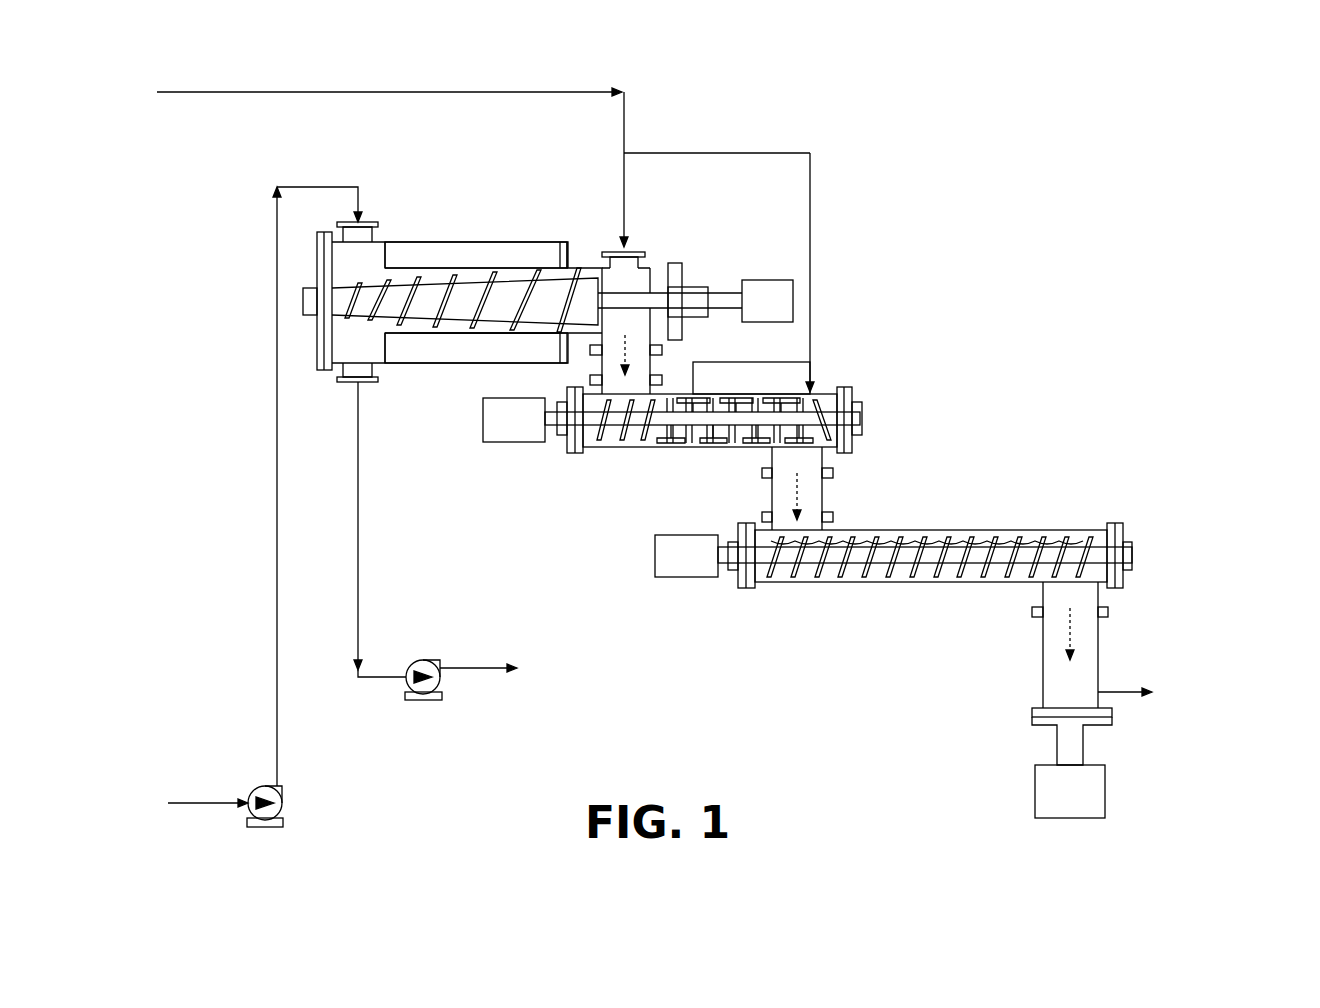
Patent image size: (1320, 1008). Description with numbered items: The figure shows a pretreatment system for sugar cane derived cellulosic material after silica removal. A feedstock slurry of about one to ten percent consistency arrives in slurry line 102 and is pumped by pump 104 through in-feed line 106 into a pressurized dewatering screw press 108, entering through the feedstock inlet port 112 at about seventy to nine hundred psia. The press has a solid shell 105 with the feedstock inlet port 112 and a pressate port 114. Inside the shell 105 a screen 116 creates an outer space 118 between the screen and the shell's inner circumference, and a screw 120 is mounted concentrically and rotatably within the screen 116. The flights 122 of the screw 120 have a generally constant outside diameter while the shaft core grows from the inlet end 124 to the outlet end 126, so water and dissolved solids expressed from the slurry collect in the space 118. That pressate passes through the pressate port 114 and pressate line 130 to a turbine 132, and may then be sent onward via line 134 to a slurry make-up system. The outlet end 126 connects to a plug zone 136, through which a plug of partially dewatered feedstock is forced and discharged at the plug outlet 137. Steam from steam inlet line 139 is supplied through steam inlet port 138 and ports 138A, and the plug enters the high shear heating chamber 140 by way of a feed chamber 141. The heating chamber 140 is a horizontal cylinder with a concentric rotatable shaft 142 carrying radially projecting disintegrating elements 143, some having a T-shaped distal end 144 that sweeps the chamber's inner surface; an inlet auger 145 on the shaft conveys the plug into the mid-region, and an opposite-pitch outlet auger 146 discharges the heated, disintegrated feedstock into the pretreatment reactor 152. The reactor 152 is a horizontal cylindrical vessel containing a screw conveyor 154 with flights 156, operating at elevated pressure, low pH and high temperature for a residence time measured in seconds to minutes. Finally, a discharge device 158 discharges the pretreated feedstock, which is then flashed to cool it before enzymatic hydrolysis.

The slurry line 102 is at (223, 802).
The pump 104 is at (285, 793).
The solid shell 105 is at (532, 240).
The in-feed line 106 is at (277, 682).
The pressurized dewatering screw press 108 is at (460, 228).
The feedstock inlet port 112 is at (368, 237).
The pressate port 114 is at (355, 368).
The screen 116 is at (423, 367).
The outer space 118 is at (477, 352).
The screw 120 is at (382, 297).
The flights 122 is at (387, 288).
The inlet end 124 is at (352, 237).
The outlet end 126 is at (592, 262).
The pressate line 130 is at (362, 555).
The turbine 132 is at (422, 658).
The line 134 is at (477, 667).
The plug zone 136 is at (600, 258).
The plug outlet 137 is at (600, 283).
The steam inlet port 138 is at (630, 250).
The steam inlet ports 138A is at (800, 357).
The steam inlet line 139 is at (625, 132).
The high shear heating chamber 140 is at (712, 385).
The feed chamber 141 is at (632, 328).
The concentric rotatable shaft 142 is at (763, 420).
The disintegrating elements 143 is at (813, 450).
The distal end 144 is at (810, 440).
The inlet auger 145 is at (622, 450).
The outlet auger 146 is at (815, 403).
The pretreatment reactor 152 is at (952, 530).
The screw conveyor 154 is at (1010, 555).
The flights 156 is at (792, 582).
The discharge device 158 is at (1098, 655).